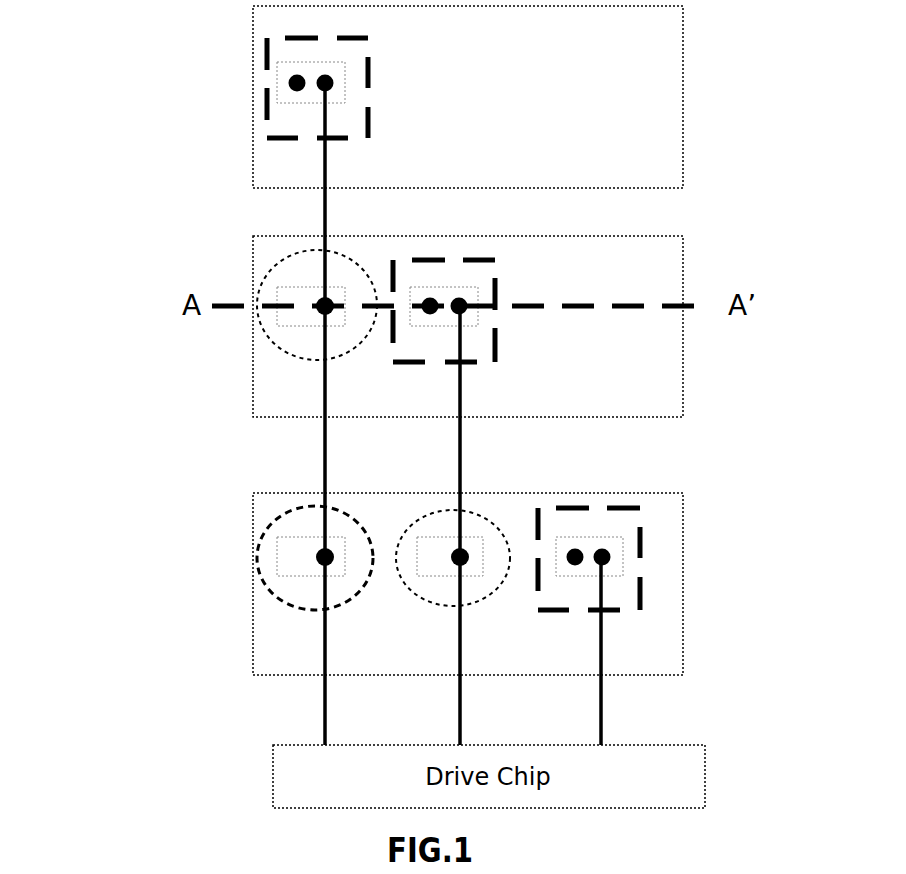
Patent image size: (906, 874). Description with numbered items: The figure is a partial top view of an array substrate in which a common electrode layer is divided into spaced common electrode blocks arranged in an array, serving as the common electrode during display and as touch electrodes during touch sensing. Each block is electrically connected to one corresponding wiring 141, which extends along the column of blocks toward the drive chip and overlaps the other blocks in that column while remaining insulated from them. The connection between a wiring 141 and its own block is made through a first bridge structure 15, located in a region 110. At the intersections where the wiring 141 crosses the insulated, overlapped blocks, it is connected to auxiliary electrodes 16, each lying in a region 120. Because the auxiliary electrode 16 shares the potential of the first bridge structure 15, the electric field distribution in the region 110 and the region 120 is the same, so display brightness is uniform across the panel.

The region with the first bridge structure 110 is at (368, 127).
The first bridge structure 15 is at (343, 88).
The region with the auxiliary electrode 120 is at (345, 268).
The auxiliary electrode 16 is at (312, 285).
The wiring 141 is at (322, 217).